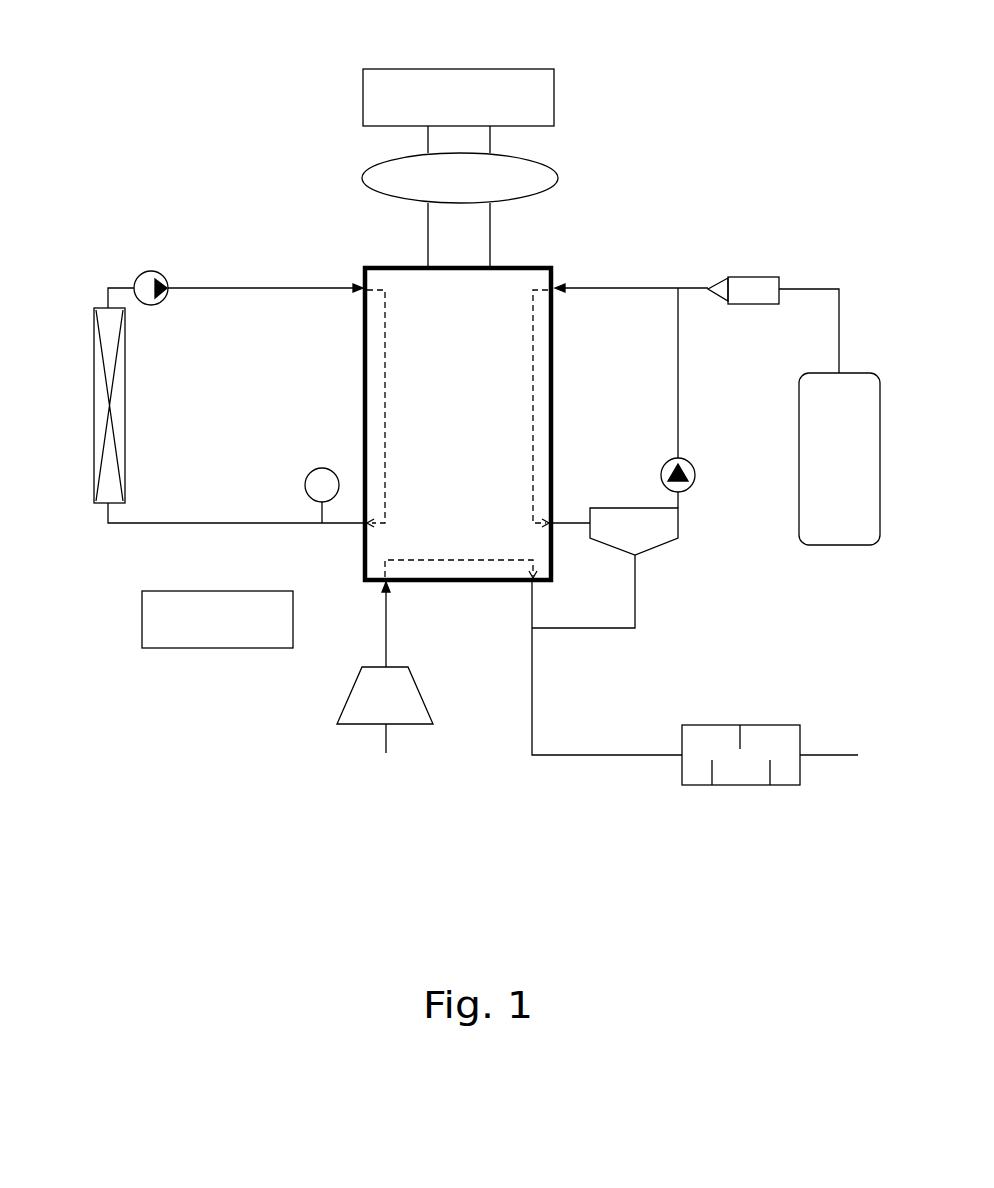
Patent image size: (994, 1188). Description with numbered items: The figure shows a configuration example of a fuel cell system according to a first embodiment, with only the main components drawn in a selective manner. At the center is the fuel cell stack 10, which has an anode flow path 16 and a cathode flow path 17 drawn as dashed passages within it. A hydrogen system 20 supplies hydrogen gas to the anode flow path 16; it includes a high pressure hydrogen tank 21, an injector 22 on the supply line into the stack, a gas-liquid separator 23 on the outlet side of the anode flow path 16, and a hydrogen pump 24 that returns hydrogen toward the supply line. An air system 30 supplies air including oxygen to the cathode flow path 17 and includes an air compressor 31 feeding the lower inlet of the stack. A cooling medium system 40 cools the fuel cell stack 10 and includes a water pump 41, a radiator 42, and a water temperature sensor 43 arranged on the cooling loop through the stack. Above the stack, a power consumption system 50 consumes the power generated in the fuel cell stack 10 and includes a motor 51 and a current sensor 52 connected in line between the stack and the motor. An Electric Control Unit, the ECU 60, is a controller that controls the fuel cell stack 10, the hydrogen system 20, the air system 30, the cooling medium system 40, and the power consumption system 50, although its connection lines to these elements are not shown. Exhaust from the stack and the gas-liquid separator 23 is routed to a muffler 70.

The fuel cell stack 10 is at (526, 266).
The anode flow path 16 is at (533, 438).
The cathode flow path 17 is at (430, 560).
The hydrogen system 20 is at (854, 236).
The high pressure hydrogen tank 21 is at (858, 373).
The injector 22 is at (747, 277).
The gas-liquid separator 23 is at (630, 508).
The hydrogen pump 24 is at (692, 459).
The air system 30 is at (423, 754).
The air compressor 31 is at (418, 684).
The cooling medium system 40 is at (97, 253).
The water pump 41 is at (150, 271).
The radiator 42 is at (95, 333).
The water temperature sensor 43 is at (322, 468).
The power consumption system 50 is at (333, 78).
The motor 51 is at (554, 95).
The current sensor 52 is at (553, 167).
The Electric Control Unit (ECU) 60 is at (258, 591).
The muffler 70 is at (765, 725).